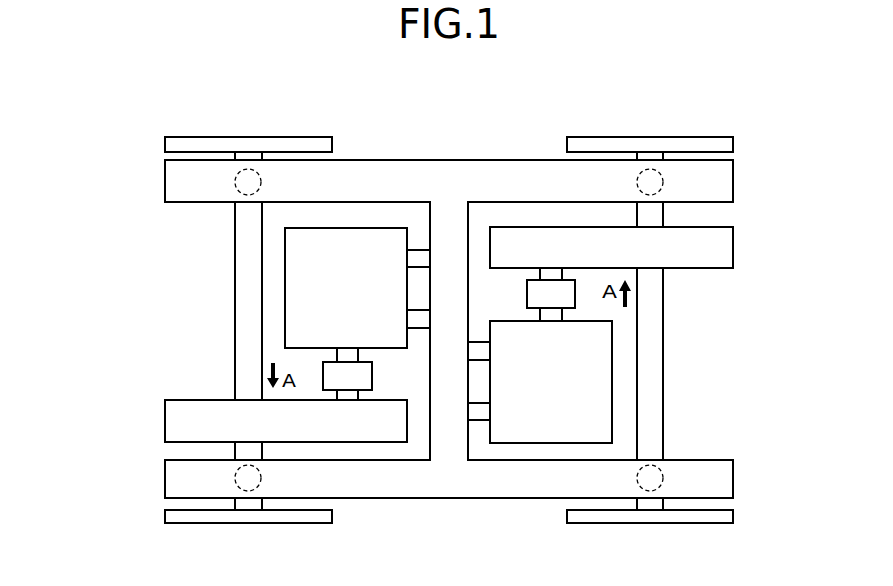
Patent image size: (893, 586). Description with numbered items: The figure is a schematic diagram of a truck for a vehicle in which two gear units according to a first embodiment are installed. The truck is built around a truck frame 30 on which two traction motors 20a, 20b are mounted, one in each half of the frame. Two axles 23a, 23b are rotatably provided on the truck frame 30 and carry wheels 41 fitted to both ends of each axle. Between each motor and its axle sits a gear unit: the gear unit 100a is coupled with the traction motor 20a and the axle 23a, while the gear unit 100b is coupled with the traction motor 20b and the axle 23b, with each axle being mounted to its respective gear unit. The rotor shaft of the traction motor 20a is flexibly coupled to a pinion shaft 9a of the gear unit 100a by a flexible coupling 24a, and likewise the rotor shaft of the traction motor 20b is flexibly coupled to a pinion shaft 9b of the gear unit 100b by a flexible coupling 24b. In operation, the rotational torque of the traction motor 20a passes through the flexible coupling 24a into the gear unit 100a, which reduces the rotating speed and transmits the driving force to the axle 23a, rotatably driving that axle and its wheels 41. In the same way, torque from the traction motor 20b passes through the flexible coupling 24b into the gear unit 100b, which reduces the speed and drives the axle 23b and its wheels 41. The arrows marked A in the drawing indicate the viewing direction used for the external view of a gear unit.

The truck frame 30 is at (509, 160).
The wheel 41 is at (165, 143).
The axle 23a is at (247, 266).
The axle 23b is at (651, 403).
The gear unit 100a is at (165, 423).
The gear unit 100b is at (733, 248).
The traction motor 20a is at (372, 228).
The traction motor 20b is at (523, 443).
The flexible coupling 24a is at (323, 375).
The flexible coupling 24b is at (575, 296).
The pinion shaft 9a is at (347, 397).
The pinion shaft 9b is at (553, 272).